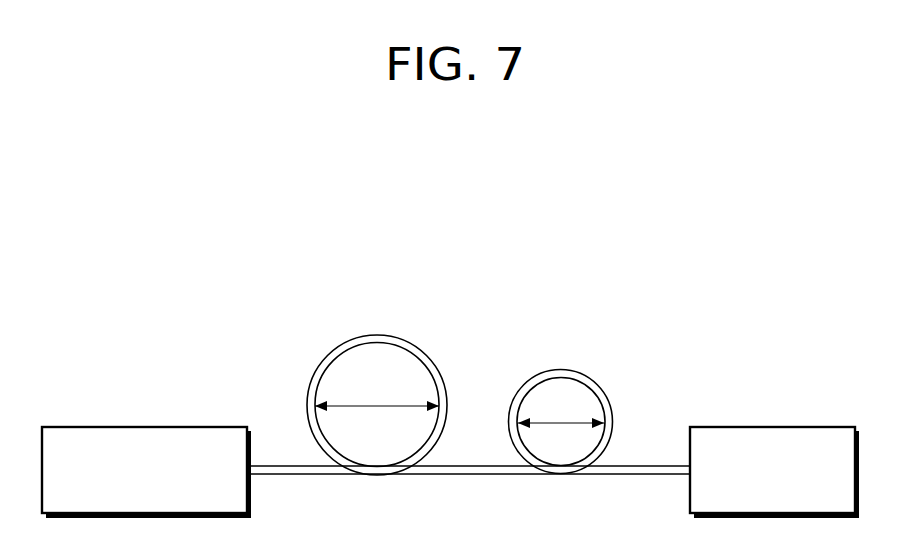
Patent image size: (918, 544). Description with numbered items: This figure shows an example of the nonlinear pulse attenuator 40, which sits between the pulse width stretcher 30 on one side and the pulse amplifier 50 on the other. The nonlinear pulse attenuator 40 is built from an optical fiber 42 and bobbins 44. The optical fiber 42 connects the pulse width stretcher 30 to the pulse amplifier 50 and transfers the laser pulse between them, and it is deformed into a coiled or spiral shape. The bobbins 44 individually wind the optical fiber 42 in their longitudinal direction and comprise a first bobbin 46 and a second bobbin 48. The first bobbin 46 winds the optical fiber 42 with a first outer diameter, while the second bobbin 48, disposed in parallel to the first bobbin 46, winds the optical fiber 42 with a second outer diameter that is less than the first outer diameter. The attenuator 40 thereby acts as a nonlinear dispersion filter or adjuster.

The pulse width stretcher 30 is at (193, 427).
The nonlinear pulse attenuator 40 is at (330, 237).
The optical fiber 42 is at (343, 345).
The bobbins 44 is at (567, 284).
The first bobbin 46 is at (377, 358).
The second bobbin 48 is at (552, 390).
The pulse amplifier 50 is at (812, 427).